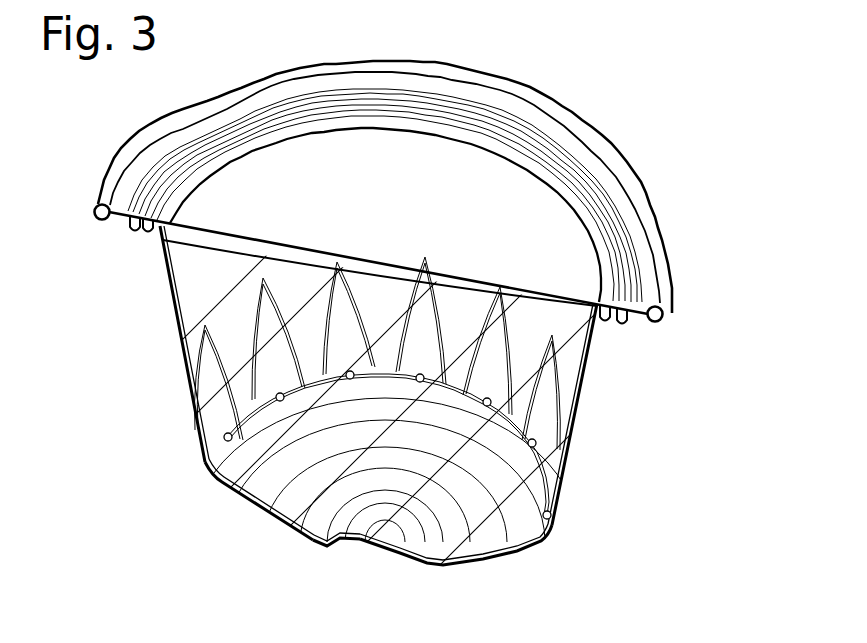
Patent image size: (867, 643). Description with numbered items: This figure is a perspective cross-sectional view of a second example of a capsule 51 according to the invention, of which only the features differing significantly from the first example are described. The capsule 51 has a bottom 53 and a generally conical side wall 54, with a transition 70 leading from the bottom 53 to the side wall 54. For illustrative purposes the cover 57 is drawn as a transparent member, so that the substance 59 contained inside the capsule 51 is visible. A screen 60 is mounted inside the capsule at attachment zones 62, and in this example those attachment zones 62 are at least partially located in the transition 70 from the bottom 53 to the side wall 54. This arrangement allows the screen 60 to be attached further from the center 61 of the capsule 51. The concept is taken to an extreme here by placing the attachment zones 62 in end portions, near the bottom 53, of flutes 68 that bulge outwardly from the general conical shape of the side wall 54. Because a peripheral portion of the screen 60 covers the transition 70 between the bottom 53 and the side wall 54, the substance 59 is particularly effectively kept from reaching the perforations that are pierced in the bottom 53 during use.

The capsule 51 is at (630, 128).
The bottom 53 is at (427, 565).
The side wall 54 is at (585, 360).
The cover 57 is at (232, 233).
The substance 59 is at (573, 212).
The screen 60 is at (483, 547).
The center 61 is at (350, 546).
The attachment zones 62 is at (348, 374).
The flutes 68 is at (330, 273).
The transition 70 is at (212, 476).